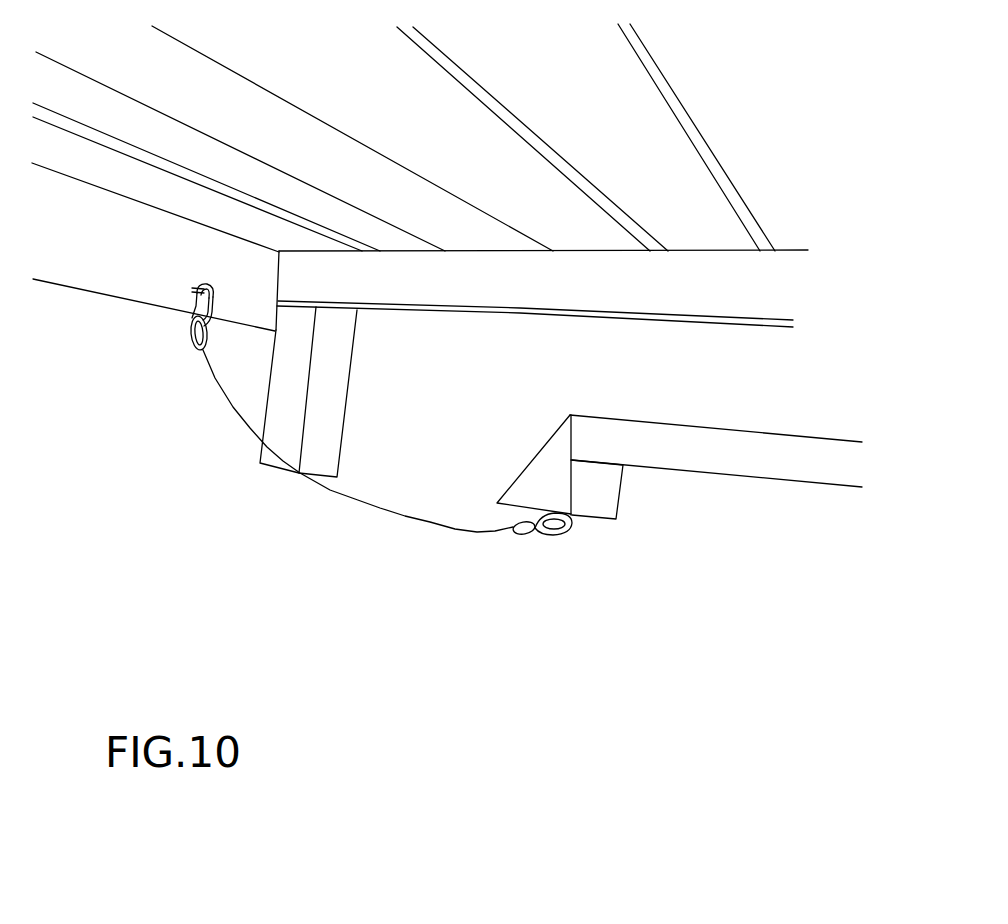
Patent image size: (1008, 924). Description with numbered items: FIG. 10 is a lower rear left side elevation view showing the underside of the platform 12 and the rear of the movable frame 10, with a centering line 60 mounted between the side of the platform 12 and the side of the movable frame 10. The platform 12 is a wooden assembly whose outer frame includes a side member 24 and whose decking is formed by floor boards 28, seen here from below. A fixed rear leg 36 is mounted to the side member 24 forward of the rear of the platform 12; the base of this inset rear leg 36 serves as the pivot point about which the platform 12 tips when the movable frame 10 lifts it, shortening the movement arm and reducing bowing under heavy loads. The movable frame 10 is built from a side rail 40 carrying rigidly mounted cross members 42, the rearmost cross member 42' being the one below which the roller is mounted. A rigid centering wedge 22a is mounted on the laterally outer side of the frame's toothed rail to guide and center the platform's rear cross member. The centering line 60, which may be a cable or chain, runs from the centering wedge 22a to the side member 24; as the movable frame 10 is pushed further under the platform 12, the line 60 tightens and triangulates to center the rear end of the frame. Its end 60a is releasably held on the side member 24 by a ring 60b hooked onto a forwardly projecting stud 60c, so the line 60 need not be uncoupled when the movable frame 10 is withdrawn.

The movable frame 10 is at (757, 426).
The platform 12 is at (663, 327).
The centering wedge 22a is at (590, 518).
The side member 24 is at (63, 276).
The floor board 28 is at (700, 192).
The rear leg 36 is at (322, 420).
The side rail 40 is at (615, 498).
The cross member 42 is at (535, 334).
The rearmost cross member 42' is at (717, 492).
The centering line 60 is at (392, 511).
The end of centering line 60a is at (191, 346).
The ring 60b is at (213, 310).
The stud 60c is at (218, 295).